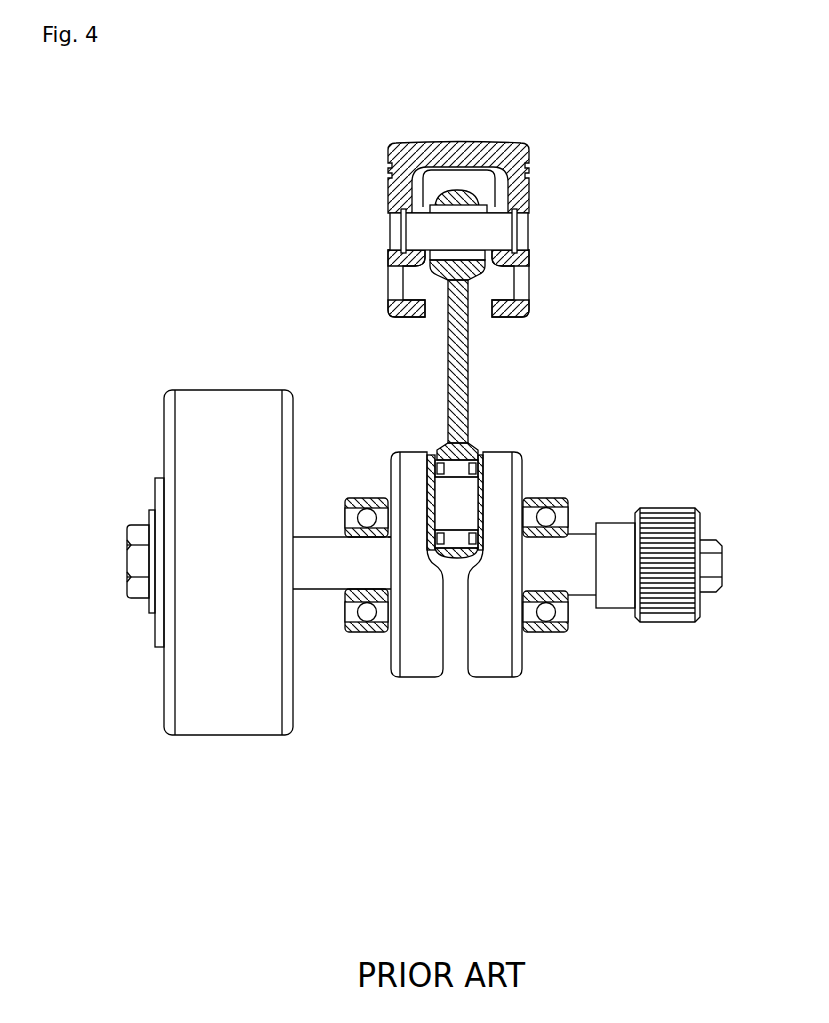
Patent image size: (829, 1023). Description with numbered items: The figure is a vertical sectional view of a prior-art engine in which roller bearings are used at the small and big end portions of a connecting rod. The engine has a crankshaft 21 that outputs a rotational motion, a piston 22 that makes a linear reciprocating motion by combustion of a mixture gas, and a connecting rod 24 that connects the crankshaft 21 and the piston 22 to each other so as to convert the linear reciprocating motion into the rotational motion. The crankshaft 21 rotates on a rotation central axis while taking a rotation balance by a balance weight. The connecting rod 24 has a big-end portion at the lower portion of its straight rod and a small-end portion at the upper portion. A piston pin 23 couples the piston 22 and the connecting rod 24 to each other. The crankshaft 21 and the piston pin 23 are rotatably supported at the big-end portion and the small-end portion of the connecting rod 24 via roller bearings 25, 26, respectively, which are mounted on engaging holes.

The crankshaft 21 is at (467, 497).
The piston 22 is at (523, 192).
The piston pin 23 is at (497, 237).
The connecting rod 24 is at (457, 372).
The roller bearing 25 is at (452, 465).
The roller bearing 26 is at (432, 188).